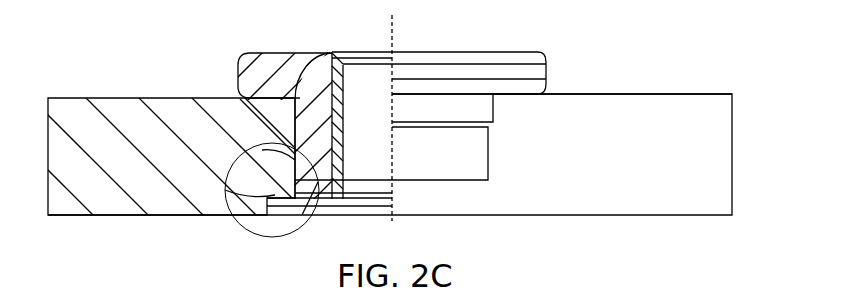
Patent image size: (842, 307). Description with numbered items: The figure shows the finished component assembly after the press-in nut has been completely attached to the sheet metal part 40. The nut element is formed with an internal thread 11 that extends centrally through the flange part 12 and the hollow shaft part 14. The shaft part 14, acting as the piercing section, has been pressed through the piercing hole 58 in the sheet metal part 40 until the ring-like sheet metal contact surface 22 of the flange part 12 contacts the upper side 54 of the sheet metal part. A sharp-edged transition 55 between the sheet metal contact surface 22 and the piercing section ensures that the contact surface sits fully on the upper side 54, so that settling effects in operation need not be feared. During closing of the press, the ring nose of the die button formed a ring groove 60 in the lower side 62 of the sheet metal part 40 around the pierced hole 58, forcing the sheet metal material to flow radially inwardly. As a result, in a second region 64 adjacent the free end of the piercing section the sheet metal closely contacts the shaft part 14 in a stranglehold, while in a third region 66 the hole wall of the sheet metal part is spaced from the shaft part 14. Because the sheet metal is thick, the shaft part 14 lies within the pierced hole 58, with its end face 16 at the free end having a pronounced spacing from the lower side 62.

The internal thread 11 is at (344, 100).
The flange part 12 is at (545, 76).
The shaft part 14 is at (318, 113).
The end face 16 is at (313, 190).
The sheet metal contact surface 22 is at (268, 53).
The sheet metal part 40 is at (733, 163).
The upper side 54 is at (642, 87).
The sharp-edged transition 55 is at (307, 53).
The piercing hole 58 is at (290, 128).
The ring groove 60 is at (278, 205).
The lower side 62 is at (109, 222).
The second region 64 is at (225, 190).
The third region 66 is at (262, 150).